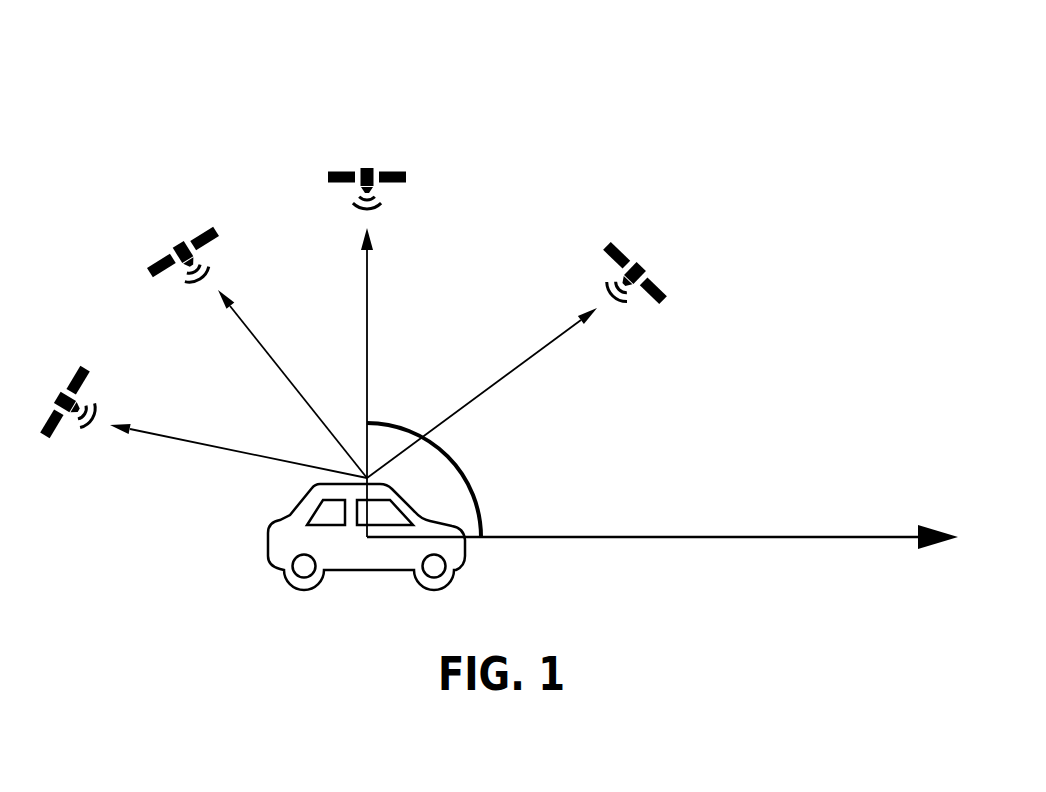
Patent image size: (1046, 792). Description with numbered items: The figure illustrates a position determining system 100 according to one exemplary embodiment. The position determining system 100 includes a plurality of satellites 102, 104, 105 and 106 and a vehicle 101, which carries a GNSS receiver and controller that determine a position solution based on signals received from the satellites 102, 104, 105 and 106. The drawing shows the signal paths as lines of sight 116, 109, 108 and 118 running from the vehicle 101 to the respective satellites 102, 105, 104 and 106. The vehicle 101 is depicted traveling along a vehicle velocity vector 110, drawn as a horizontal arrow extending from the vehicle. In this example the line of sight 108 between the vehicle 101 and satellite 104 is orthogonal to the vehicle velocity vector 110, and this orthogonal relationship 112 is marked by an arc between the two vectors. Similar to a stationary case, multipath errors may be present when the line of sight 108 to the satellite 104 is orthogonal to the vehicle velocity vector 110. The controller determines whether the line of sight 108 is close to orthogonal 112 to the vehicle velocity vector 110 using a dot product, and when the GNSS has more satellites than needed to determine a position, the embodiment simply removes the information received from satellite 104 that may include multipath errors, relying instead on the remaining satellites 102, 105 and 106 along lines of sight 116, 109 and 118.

The position determining system 100 is at (556, 81).
The vehicle 101 is at (268, 540).
The satellite 102 is at (87, 380).
The satellite 104 is at (387, 168).
The satellite 105 is at (202, 232).
The satellite 106 is at (630, 253).
The line of sight 108 is at (367, 333).
The line of sight 109 is at (317, 410).
The vehicle velocity vector 110 is at (657, 538).
The orthogonal 112 is at (478, 505).
The line of sight 116 is at (242, 452).
The line of sight 118 is at (572, 330).